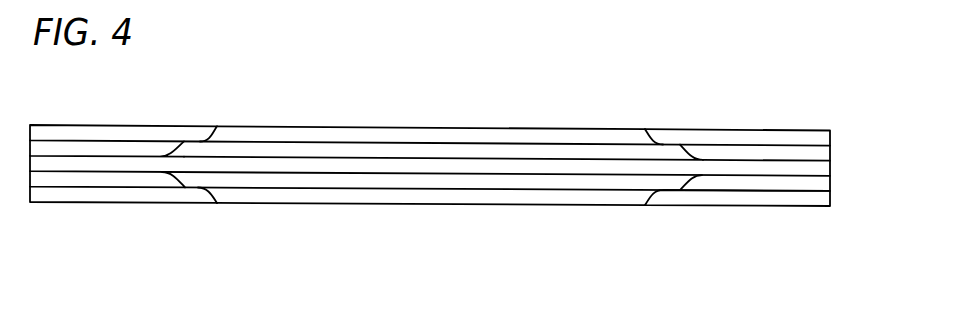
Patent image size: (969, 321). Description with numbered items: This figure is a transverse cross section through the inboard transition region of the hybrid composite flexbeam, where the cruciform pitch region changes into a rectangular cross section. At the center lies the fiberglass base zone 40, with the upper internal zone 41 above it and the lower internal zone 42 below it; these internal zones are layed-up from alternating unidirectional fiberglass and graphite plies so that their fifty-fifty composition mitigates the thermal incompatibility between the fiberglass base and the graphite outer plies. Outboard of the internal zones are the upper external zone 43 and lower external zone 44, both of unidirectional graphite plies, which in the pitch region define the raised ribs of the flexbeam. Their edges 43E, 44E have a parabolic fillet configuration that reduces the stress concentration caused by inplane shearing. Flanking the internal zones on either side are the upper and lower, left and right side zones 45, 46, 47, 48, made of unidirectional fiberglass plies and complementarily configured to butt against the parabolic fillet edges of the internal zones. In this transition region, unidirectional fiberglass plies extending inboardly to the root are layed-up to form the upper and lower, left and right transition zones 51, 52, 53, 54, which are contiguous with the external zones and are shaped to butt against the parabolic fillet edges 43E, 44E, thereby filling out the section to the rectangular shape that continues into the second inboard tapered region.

The base zone 40 is at (428, 167).
The upper internal zone 41 is at (240, 150).
The lower internal zone 42 is at (597, 183).
The upper external zone 43 is at (380, 137).
The edge of upper external zone 43E is at (658, 135).
The lower external zone 44 is at (557, 197).
The edge of lower external zone 44E is at (208, 203).
The upper left side zone 45 is at (117, 150).
The lower left side zone 46 is at (117, 180).
The upper right side zone 47 is at (775, 155).
The lower right side zone 48 is at (762, 182).
The upper left transition zone 51 is at (87, 132).
The lower left transition zone 52 is at (70, 195).
The upper right transition zone 53 is at (733, 140).
The lower right transition zone 54 is at (718, 198).